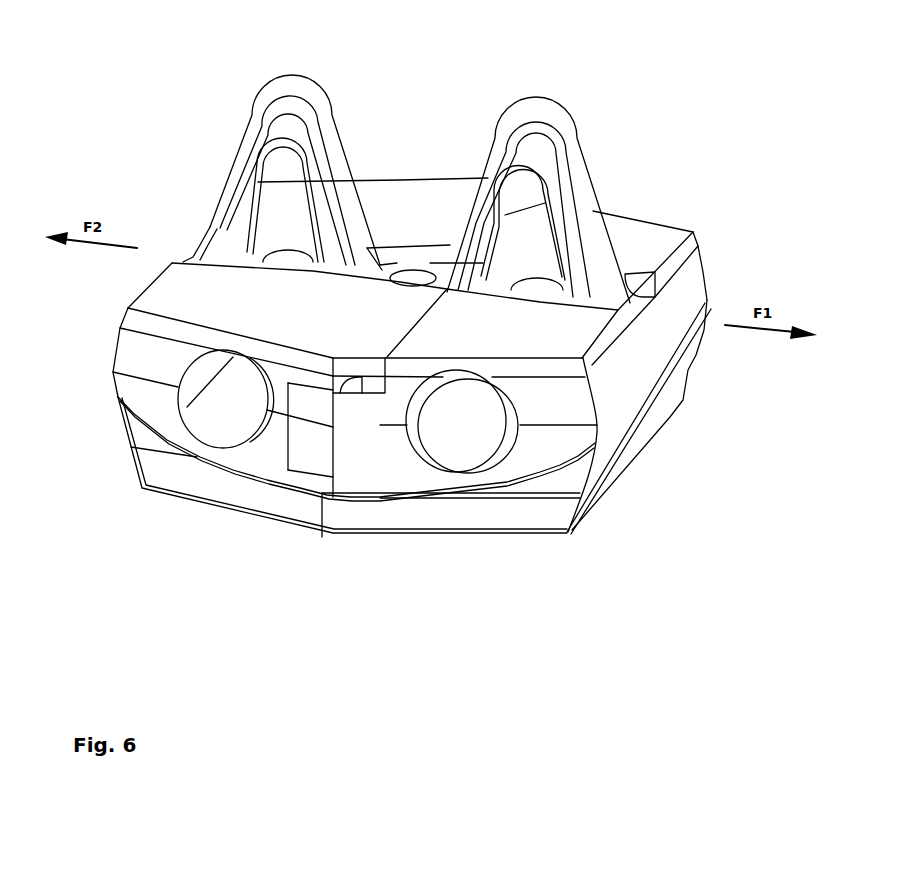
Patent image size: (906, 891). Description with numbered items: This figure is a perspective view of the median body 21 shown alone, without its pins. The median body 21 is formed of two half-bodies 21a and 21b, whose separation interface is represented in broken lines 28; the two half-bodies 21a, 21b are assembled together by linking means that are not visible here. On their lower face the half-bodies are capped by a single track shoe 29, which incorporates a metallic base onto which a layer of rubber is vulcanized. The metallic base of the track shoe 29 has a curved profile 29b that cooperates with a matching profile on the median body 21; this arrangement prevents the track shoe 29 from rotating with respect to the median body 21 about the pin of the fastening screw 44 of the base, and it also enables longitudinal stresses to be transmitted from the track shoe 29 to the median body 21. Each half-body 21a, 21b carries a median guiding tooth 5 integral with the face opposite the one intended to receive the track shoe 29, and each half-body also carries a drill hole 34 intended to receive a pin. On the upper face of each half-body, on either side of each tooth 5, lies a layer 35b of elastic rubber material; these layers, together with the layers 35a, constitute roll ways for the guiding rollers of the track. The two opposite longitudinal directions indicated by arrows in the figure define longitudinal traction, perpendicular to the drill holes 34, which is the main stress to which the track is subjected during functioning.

The median guiding tooth 5 is at (257, 95).
The median body 21 is at (631, 589).
The half-body 21a is at (132, 349).
The half-body 21b is at (577, 410).
The separation interface 28 is at (340, 463).
The track shoe 29 is at (190, 483).
The curved profile 29b is at (117, 396).
The drill hole 34 is at (214, 422).
The layer of elastic material 35a is at (308, 268).
The layer of elastic material 35b is at (520, 288).
The fastening screw 44 is at (413, 272).